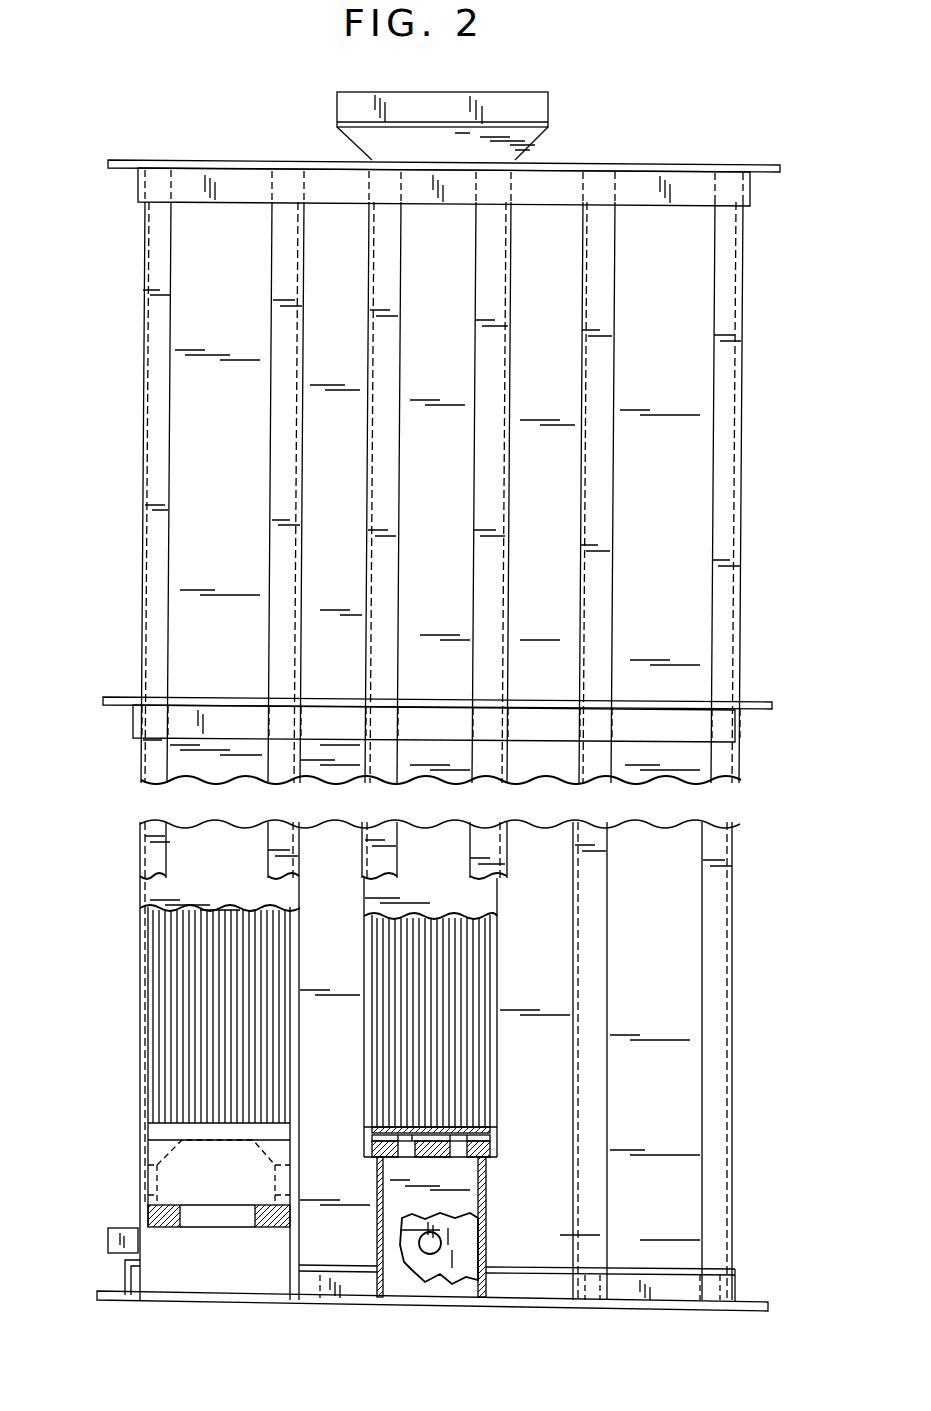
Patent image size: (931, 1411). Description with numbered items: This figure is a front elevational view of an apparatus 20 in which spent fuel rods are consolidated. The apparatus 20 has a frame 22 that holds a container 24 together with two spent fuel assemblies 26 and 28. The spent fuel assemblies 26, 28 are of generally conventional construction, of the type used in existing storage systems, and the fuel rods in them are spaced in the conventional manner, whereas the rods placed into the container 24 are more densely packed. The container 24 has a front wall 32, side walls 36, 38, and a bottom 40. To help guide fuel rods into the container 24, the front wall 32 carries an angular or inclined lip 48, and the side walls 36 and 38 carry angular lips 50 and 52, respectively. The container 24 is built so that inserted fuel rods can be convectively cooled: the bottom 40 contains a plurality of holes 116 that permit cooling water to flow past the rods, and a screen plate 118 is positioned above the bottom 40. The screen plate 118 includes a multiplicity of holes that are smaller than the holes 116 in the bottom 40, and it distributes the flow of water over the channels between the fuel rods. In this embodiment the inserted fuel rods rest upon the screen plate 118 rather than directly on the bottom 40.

The apparatus 20 is at (455, 160).
The frame 22 is at (780, 171).
The container 24 is at (462, 220).
The spent fuel assembly 26 is at (675, 287).
The spent fuel assembly 28 is at (192, 478).
The front wall 32 is at (448, 453).
The side wall 36 is at (367, 500).
The side wall 38 is at (507, 538).
The bottom 40 is at (497, 1148).
The angular lip 48 is at (550, 152).
The angular lip 50 is at (345, 150).
The angular lip 52 is at (540, 140).
The holes 116 is at (490, 1178).
The screen plate 118 is at (495, 1130).